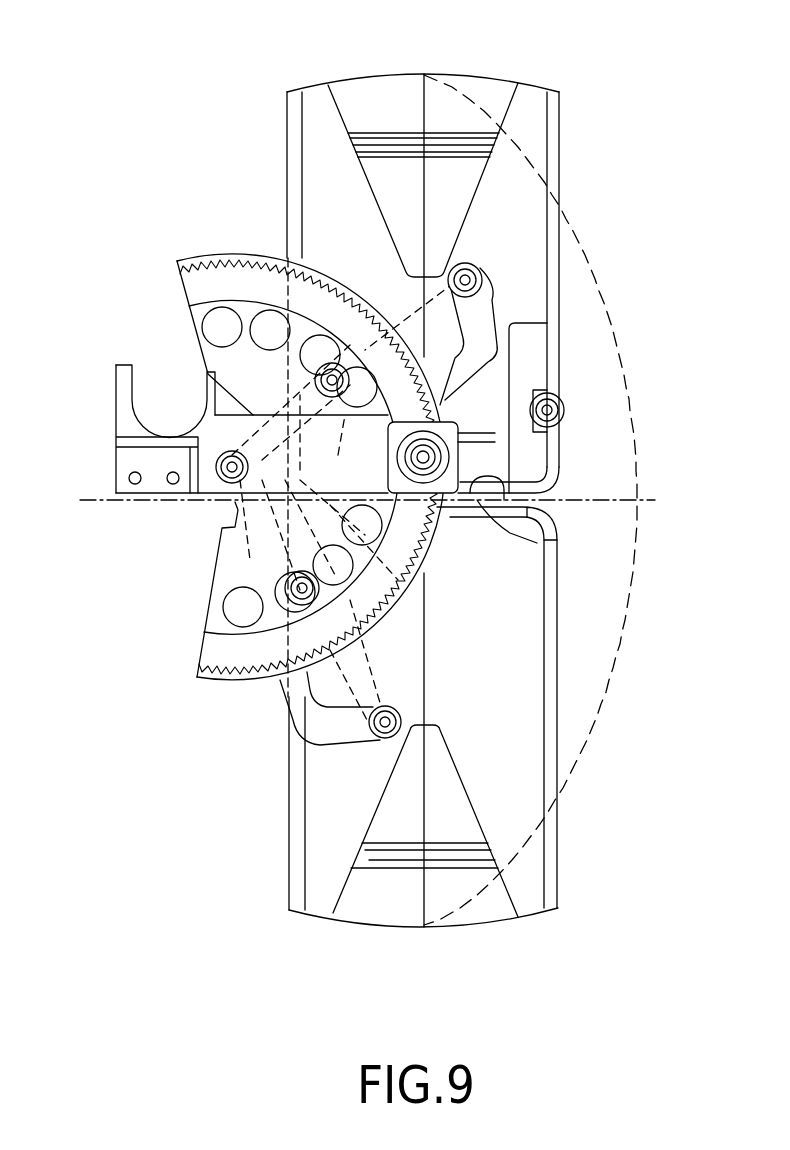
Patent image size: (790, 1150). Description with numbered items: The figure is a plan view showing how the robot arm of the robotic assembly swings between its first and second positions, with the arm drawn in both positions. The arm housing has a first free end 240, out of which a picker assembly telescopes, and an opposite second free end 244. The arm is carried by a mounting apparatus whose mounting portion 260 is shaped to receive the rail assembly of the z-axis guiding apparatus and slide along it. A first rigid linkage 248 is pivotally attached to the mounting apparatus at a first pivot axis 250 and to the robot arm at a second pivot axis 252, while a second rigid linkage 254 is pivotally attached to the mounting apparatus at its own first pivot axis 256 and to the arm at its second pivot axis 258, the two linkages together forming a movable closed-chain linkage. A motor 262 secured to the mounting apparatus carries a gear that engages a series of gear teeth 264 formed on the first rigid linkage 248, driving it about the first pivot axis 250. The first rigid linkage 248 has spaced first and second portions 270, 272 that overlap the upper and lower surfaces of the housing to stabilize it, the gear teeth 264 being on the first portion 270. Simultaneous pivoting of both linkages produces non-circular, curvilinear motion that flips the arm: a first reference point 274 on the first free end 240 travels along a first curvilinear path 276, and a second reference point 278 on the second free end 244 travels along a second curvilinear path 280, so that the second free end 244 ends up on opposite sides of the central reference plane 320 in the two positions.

The first free end 240 is at (495, 78).
The second free end 244 is at (540, 490).
The first rigid linkage 248 is at (238, 685).
The first pivot axis 250 is at (230, 480).
The second pivot axis 252 is at (467, 278).
The second rigid linkage 254 is at (533, 385).
The first pivot axis 256 is at (322, 382).
The second pivot axis 258 is at (565, 410).
The mounting portion 260 is at (135, 385).
The motor 262 is at (459, 447).
The gear teeth 264 is at (182, 272).
The first portion 270 is at (495, 318).
The second portion 272 is at (395, 305).
The first reference point 274 is at (424, 74).
The first non-circular, curvilinear path 276 is at (565, 218).
The second reference point 278 is at (470, 473).
The second non-circular, curvilinear path 280 is at (420, 560).
The central reference plane 320 is at (647, 503).